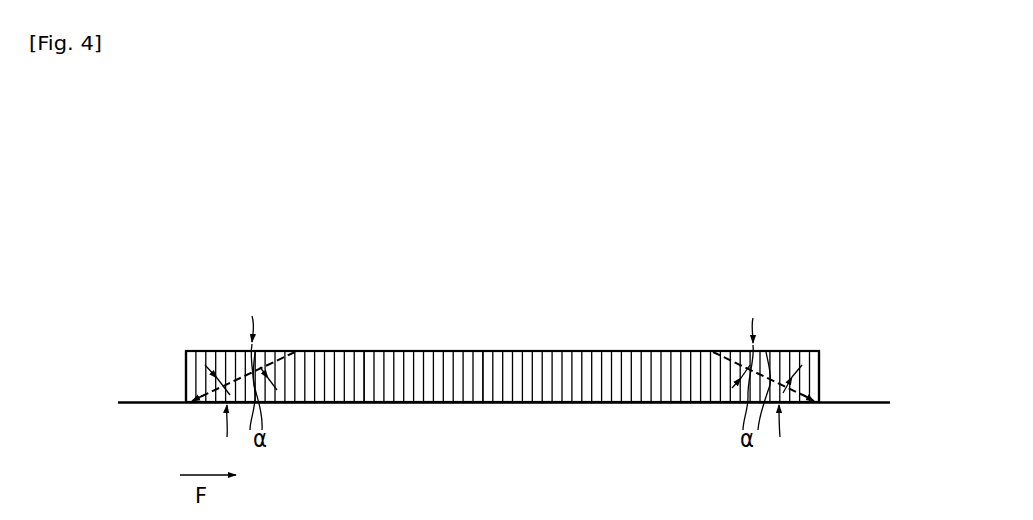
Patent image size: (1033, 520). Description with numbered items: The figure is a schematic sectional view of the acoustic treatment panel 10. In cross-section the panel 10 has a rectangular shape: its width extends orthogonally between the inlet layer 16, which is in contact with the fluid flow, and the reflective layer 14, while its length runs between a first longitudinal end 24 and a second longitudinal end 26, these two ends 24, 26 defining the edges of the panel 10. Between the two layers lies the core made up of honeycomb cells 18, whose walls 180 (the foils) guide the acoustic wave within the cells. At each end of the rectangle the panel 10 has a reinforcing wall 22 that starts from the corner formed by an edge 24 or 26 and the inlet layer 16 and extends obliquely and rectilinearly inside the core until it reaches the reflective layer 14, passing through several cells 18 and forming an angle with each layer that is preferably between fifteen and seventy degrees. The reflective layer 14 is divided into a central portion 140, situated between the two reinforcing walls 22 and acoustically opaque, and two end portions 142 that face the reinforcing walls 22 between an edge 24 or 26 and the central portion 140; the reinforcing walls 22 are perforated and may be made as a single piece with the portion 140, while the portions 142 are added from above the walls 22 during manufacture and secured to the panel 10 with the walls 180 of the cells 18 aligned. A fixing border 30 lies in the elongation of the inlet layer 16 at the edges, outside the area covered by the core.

The acoustic treatment panel 10 is at (840, 198).
The reflective layer 14 is at (630, 350).
The portion of reflective layer 140 is at (552, 350).
The portion of reflective layer 142 is at (203, 350).
The inlet layer 16 is at (567, 403).
The honeycomb cells 18 is at (362, 351).
The walls of honeycomb cells 180 is at (488, 377).
The reinforcing wall 22 is at (280, 360).
The first longitudinal end 24 is at (187, 378).
The second longitudinal end 26 is at (820, 378).
The fixing border 30 is at (140, 403).